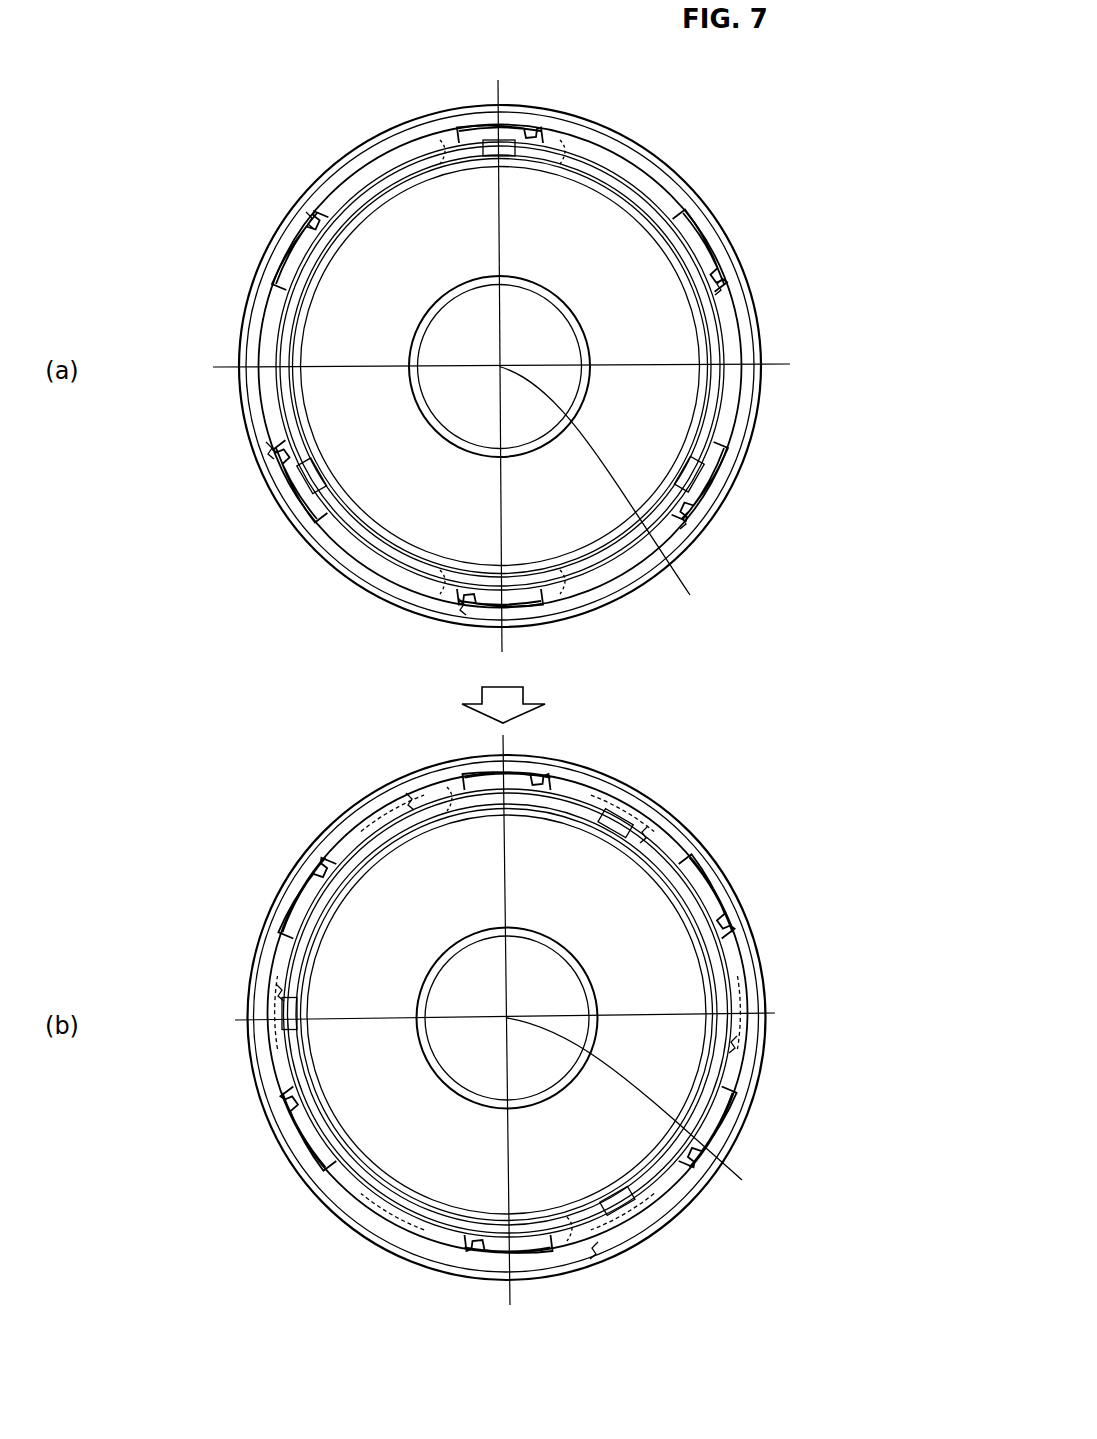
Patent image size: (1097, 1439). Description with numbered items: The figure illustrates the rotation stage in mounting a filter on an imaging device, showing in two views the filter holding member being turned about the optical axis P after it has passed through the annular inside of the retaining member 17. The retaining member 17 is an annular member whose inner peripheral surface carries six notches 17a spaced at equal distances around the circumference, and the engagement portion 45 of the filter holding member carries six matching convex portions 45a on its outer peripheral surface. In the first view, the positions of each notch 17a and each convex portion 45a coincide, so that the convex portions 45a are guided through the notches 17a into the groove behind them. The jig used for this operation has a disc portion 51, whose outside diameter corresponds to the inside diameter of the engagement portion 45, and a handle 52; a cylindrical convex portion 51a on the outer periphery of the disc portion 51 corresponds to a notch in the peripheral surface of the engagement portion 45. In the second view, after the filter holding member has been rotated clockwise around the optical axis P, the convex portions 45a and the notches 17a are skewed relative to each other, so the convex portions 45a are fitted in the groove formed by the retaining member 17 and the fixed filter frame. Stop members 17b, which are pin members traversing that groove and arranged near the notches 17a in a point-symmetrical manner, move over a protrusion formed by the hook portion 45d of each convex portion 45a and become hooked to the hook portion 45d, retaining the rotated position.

The retaining member 17 is at (757, 333).
The notch 17a is at (473, 127).
The stop member 17b is at (440, 148).
The engagement portion 45 is at (742, 382).
The convex portion 45a is at (415, 172).
The hook portion 45d is at (537, 128).
The disc portion 51 is at (553, 203).
The cylindrical convex portion 51a is at (500, 142).
The handle 52 is at (521, 322).
The optical axis P is at (635, 785).